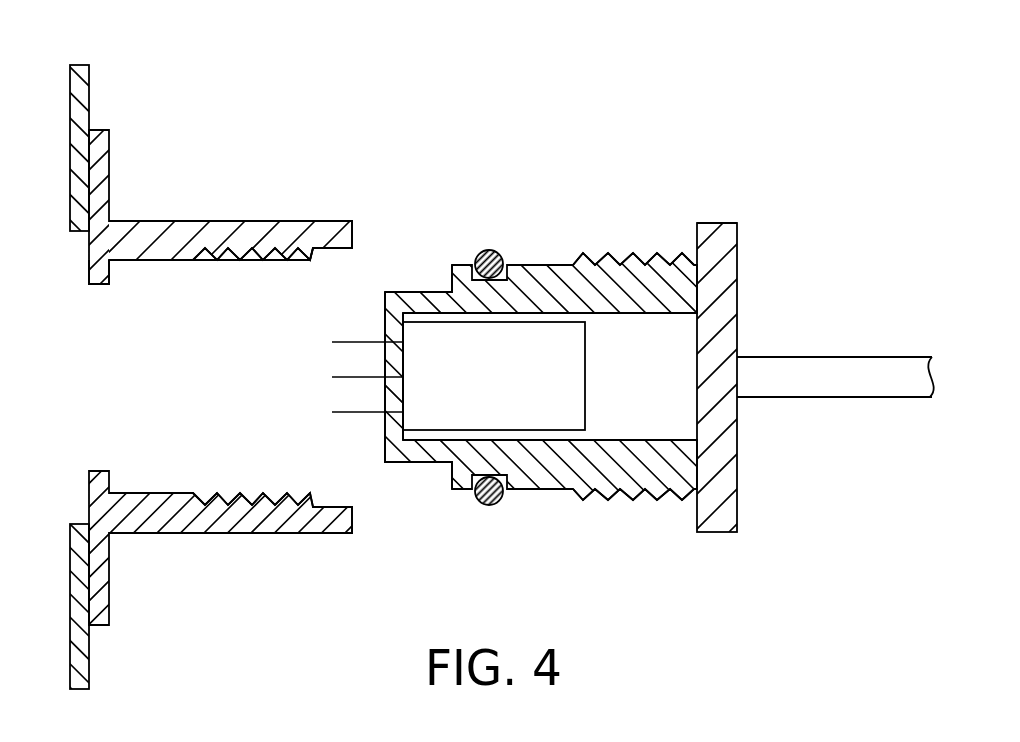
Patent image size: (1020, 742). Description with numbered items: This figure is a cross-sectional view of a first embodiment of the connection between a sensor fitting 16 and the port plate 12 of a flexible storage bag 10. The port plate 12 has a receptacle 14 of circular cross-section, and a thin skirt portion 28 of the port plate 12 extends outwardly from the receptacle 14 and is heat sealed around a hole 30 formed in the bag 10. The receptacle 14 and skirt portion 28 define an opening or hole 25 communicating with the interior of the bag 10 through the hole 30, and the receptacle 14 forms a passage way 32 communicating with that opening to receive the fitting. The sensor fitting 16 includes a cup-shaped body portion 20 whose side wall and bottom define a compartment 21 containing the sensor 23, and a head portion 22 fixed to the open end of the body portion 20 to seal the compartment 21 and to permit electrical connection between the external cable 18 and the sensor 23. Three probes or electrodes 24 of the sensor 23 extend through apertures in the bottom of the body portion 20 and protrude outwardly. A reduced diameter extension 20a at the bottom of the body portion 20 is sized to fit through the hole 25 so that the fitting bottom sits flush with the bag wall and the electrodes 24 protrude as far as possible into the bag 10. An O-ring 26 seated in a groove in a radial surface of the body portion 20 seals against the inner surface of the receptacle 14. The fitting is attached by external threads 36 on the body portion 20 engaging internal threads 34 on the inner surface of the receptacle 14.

The flexible storage bag 10 is at (70, 87).
The port plate 12 is at (105, 148).
The receptacle 14 is at (163, 220).
The sensor fitting 16 is at (710, 222).
The external cable 18 is at (917, 367).
The body portion 20 is at (565, 475).
The reduced diameter extension 20a is at (410, 298).
The compartment 21 is at (648, 383).
The head portion 22 is at (728, 507).
The sensor 23 is at (484, 400).
The probes 24 is at (342, 342).
The hole 25 is at (97, 285).
The O-ring 26 is at (490, 250).
The skirt portion 28 is at (105, 573).
The hole 30 is at (73, 552).
The passage way 32 is at (240, 397).
The internal threads 34 is at (240, 260).
The external threads 36 is at (632, 254).